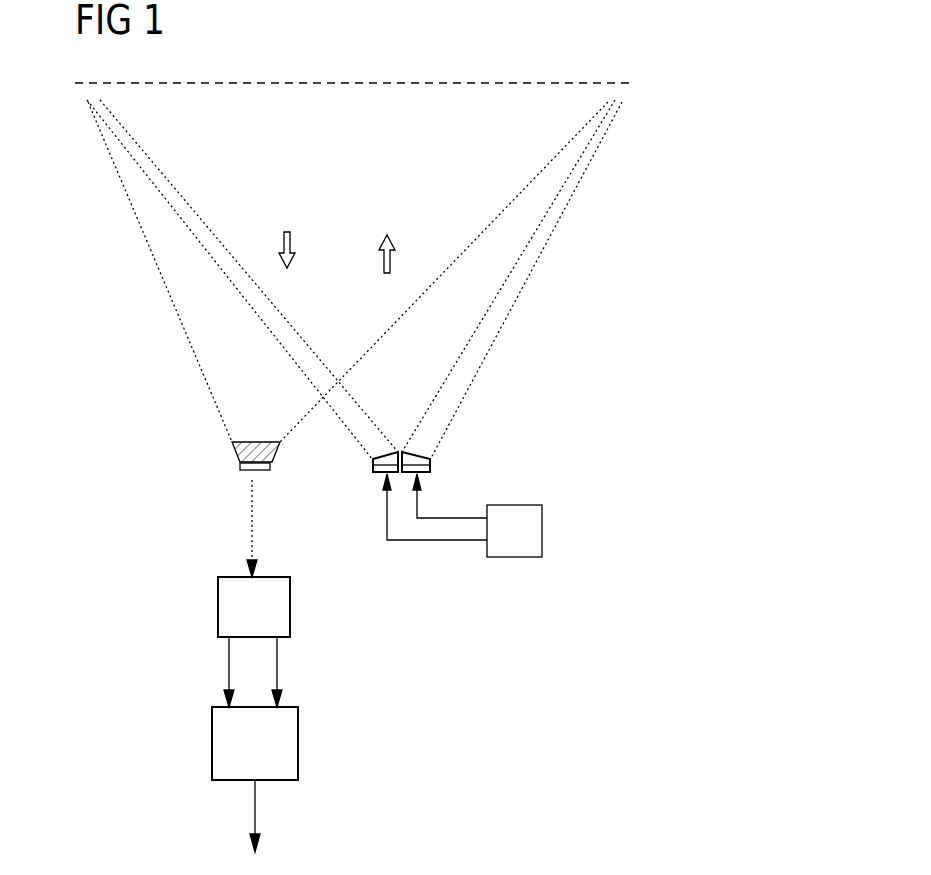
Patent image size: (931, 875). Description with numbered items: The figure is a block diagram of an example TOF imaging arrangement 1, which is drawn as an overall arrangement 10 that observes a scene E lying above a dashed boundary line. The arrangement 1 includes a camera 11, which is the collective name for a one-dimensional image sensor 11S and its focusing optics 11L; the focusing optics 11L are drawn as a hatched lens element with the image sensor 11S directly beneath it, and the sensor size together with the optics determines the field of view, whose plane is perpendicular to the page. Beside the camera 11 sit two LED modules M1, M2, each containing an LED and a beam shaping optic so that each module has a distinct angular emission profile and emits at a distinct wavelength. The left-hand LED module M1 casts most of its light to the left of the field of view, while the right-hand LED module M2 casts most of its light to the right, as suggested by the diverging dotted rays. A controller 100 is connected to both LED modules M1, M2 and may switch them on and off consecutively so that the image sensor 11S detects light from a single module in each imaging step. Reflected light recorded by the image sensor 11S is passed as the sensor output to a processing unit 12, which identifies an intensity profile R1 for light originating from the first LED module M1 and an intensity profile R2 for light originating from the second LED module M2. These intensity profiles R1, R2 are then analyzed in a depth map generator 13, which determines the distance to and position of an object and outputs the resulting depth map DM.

The TOF imaging arrangement 1 is at (142, 617).
The optical arrangement 10 is at (540, 426).
The camera 11 is at (152, 479).
The focusing optics 11L is at (233, 452).
The image sensor 11S is at (247, 475).
The processing unit 12 is at (290, 607).
The depth map generator 13 is at (298, 745).
The controller 100 is at (518, 558).
The first LED module M1 is at (377, 475).
The second LED module M2 is at (432, 466).
The intensity profile R1 is at (226, 672).
The intensity profile R2 is at (280, 665).
The depth map DM is at (256, 800).
The environment E is at (355, 178).